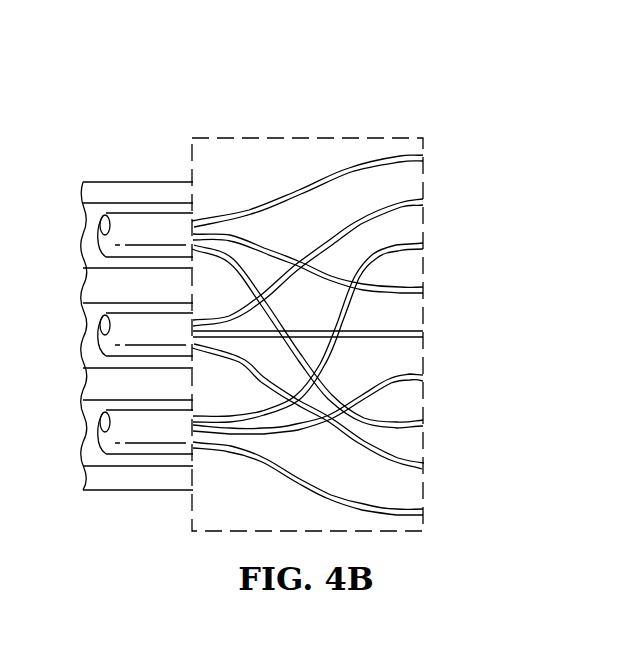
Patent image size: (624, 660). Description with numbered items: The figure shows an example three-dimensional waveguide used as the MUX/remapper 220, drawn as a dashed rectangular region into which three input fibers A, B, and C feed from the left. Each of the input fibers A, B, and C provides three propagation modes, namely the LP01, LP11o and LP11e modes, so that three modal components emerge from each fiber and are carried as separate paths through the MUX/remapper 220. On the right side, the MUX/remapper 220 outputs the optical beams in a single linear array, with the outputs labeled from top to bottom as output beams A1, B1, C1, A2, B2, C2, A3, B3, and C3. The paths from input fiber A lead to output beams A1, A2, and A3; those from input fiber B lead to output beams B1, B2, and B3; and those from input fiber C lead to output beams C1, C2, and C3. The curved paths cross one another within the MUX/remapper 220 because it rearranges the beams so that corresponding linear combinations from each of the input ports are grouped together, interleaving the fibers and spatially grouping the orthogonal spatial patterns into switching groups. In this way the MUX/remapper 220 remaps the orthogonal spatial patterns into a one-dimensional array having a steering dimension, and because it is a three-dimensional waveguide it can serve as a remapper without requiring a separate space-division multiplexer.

The MUX/remapper 220 is at (310, 136).
The input fiber A is at (123, 235).
The input fiber B is at (122, 334).
The input fiber C is at (122, 432).
The output beam A1 is at (325, 187).
The output beam A2 is at (326, 268).
The output beam A3 is at (325, 339).
The output beam B1 is at (326, 259).
The output beam B2 is at (326, 335).
The output beam B3 is at (325, 411).
The output beam C1 is at (326, 329).
The output beam C2 is at (326, 401).
The output beam C3 is at (326, 482).